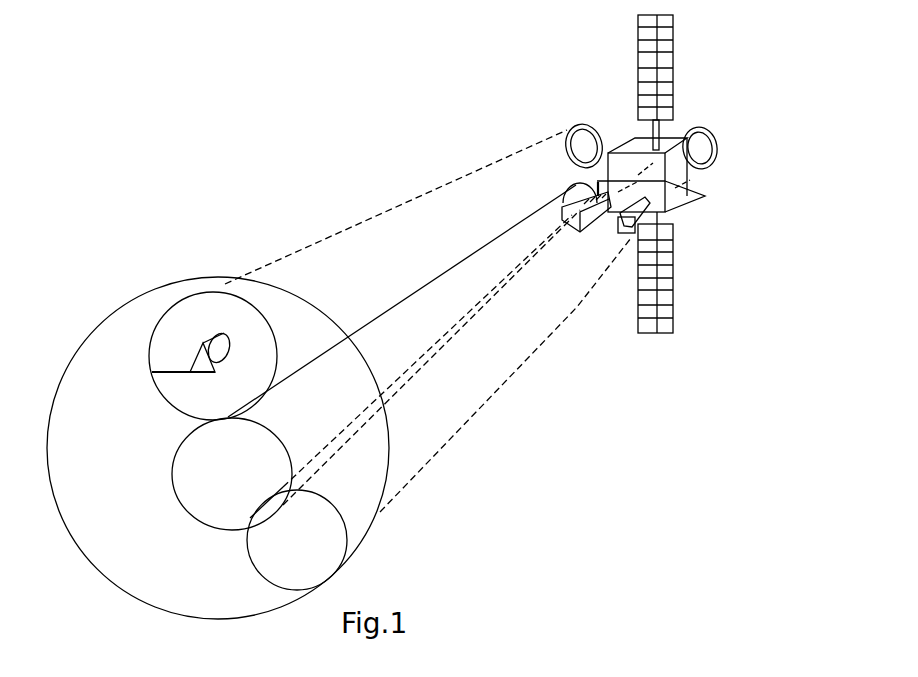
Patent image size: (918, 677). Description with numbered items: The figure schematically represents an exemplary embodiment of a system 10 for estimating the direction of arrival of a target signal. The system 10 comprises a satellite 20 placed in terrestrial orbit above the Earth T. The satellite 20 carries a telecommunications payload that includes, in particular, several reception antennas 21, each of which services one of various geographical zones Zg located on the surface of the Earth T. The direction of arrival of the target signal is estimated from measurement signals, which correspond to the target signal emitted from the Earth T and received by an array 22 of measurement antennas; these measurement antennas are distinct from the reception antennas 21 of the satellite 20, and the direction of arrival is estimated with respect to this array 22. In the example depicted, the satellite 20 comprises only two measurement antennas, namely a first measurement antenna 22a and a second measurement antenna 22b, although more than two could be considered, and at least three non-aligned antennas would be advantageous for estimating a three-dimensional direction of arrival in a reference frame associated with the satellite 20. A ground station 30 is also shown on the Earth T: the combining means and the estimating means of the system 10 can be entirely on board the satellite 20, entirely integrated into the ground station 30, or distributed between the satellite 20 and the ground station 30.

The system for estimating direction of arrival 10 is at (372, 121).
The Earth T is at (160, 287).
The geographical zones Zg is at (168, 411).
The ground station 30 is at (153, 374).
The reception antennas 21 is at (571, 170).
The array of measurement antennas 22 is at (693, 192).
The satellite 20 is at (690, 207).
The first measurement antenna 22a is at (580, 232).
The second measurement antenna 22b is at (628, 234).